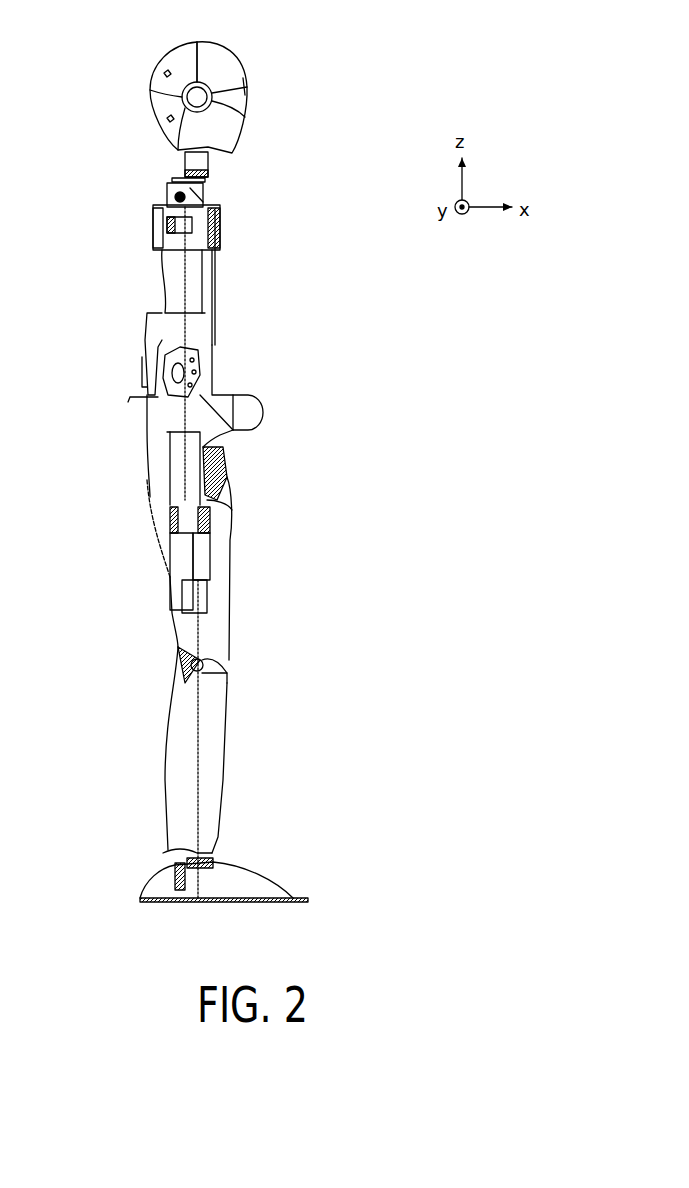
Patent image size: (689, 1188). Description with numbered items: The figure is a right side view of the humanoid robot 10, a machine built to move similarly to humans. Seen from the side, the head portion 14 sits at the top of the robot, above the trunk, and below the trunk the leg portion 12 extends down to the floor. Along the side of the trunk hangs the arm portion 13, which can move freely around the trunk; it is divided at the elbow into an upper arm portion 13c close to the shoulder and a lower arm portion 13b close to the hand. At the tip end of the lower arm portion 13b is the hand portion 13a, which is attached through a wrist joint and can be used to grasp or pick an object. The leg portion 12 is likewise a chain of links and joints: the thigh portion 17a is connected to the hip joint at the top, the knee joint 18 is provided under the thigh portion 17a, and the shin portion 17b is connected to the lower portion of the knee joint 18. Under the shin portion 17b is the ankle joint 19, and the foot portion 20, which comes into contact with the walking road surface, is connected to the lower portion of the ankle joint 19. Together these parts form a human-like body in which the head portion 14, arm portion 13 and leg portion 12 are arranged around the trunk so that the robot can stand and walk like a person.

The humanoid robot 10 is at (110, 103).
The leg portion 12 is at (230, 717).
The arm portion 13 is at (160, 277).
The hand portion 13a is at (198, 595).
The lower arm portion 13b is at (208, 503).
The upper arm portion 13c is at (205, 278).
The head portion 14 is at (237, 50).
The thigh portion 17a is at (233, 541).
The shin portion 17b is at (220, 795).
The knee joint 18 is at (227, 662).
The ankle joint 19 is at (212, 853).
The foot portion 20 is at (273, 887).